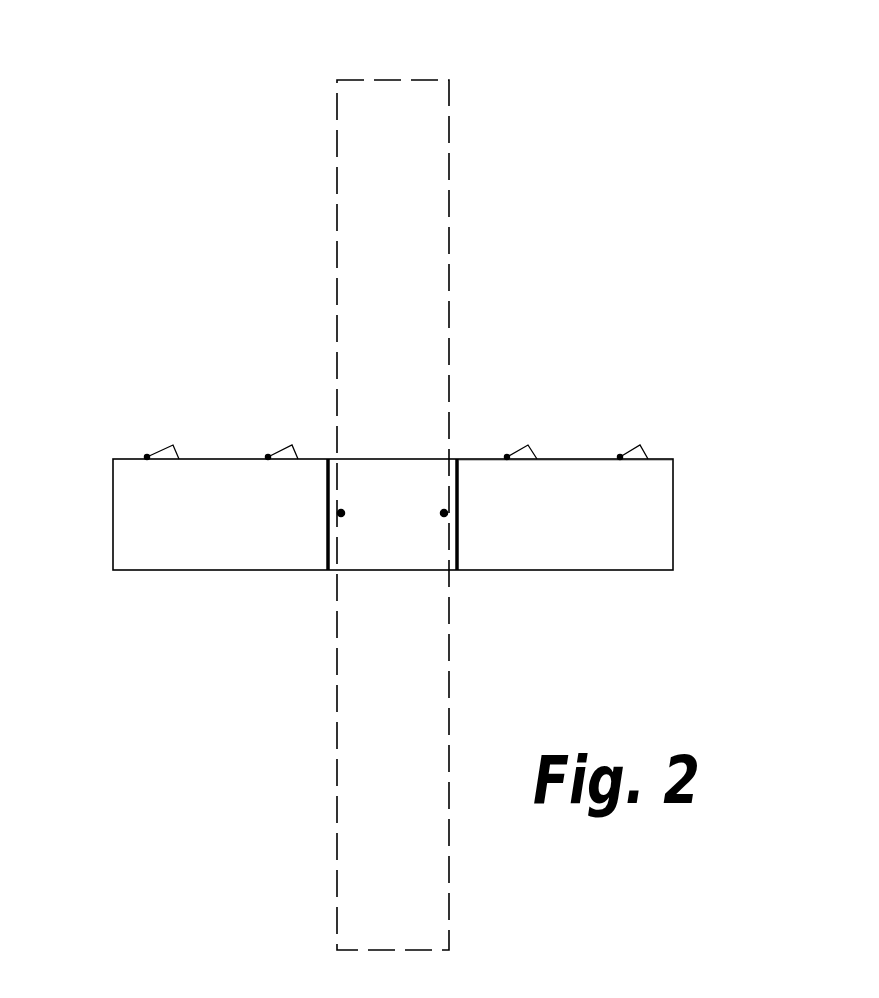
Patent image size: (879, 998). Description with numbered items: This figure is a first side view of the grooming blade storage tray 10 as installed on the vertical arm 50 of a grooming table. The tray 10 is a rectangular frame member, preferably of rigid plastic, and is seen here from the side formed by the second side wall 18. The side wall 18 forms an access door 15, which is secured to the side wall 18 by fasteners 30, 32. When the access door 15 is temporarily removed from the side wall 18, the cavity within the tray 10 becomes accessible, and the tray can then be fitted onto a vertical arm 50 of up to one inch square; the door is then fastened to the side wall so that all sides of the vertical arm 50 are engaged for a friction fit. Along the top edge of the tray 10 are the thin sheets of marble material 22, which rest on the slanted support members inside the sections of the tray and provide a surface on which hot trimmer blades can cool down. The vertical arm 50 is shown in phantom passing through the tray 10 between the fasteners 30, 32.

The grooming blade storage tray 10 is at (112, 478).
The access door 15 is at (432, 473).
The second side wall 18 is at (582, 482).
The marble material 22 is at (172, 446).
The fastener 30 is at (338, 518).
The fastener 32 is at (449, 518).
The vertical arm 50 is at (448, 110).